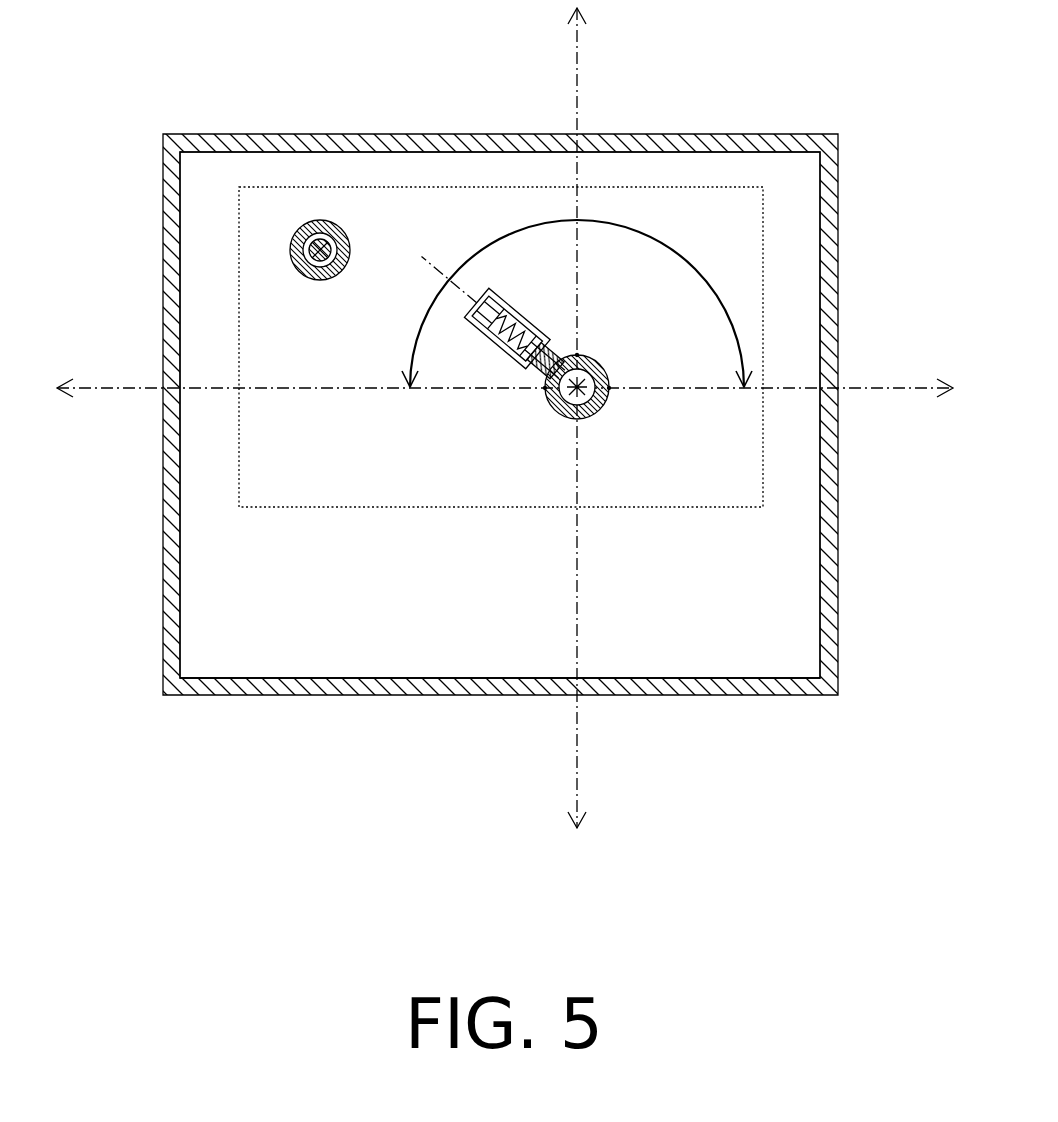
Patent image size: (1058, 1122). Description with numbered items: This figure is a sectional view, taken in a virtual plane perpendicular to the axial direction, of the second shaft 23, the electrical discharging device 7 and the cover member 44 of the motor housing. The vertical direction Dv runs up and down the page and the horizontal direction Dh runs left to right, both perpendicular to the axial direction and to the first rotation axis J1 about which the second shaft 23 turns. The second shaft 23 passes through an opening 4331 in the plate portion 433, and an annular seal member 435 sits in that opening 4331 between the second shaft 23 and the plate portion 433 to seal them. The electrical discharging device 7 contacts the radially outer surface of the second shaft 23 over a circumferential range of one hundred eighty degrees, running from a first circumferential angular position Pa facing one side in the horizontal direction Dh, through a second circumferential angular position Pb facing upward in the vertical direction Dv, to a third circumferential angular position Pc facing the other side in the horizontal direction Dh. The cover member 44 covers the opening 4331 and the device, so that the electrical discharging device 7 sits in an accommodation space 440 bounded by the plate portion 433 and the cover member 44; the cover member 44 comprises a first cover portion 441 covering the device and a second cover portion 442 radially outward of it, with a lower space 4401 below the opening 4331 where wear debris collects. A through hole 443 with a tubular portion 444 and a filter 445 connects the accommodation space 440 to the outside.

The cover member 44 is at (200, 92).
The plate portion 433 is at (878, 765).
The second cover portion 442 is at (750, 145).
The accommodation space 440 is at (315, 367).
The lower space 4401 is at (318, 620).
The first cover portion 441 is at (638, 187).
The through hole 443 is at (317, 222).
The tubular portion 444 is at (338, 232).
The filter 445 is at (300, 278).
The electrical discharging device 7 is at (525, 320).
The seal member 435 is at (555, 405).
The opening 4331 is at (598, 408).
The second shaft 23 is at (570, 420).
The first rotation axis J1 is at (600, 372).
The first circumferential angular position Pa is at (546, 390).
The second circumferential angular position Pb is at (578, 356).
The third circumferential angular position Pc is at (608, 392).
The vertical direction Dv is at (577, 60).
The horizontal direction Dh is at (900, 380).